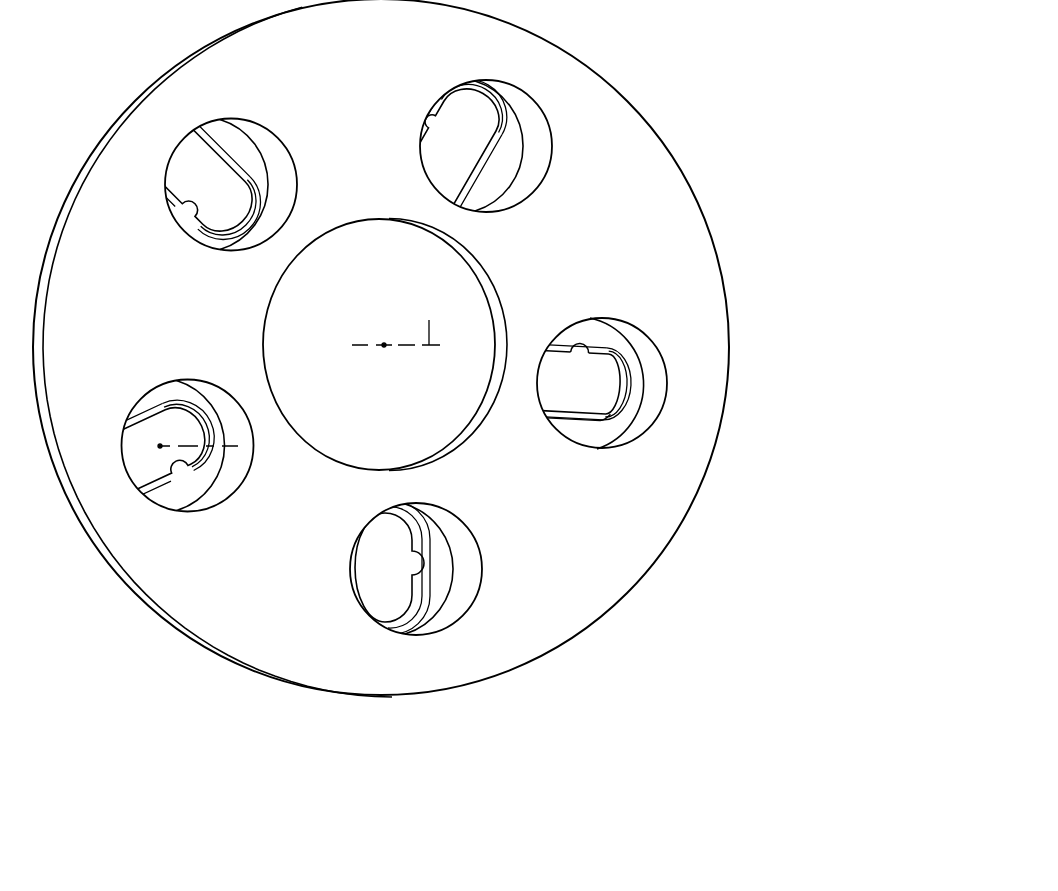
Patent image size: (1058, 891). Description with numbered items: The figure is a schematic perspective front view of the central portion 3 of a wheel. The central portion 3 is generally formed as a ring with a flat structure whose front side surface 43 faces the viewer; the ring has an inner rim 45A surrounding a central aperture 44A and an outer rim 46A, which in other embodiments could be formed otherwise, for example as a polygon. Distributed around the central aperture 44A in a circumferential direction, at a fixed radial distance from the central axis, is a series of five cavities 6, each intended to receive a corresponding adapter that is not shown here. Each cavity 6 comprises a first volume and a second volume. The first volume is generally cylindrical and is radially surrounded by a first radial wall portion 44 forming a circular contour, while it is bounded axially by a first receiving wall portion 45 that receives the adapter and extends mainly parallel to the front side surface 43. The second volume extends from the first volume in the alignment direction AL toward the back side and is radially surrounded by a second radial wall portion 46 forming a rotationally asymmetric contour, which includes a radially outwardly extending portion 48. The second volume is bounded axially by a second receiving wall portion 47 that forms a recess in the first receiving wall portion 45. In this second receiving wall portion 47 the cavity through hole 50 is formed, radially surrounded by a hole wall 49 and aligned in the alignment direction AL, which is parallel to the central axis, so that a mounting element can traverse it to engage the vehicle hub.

The central portion 3 is at (688, 84).
The cavity 6 is at (657, 440).
The front side surface 43 is at (562, 540).
The first radial wall portion 44 is at (652, 383).
The central aperture 44A is at (403, 418).
The first receiving wall portion 45 is at (607, 345).
The inner rim 45A is at (325, 456).
The second radial wall portion 46 is at (686, 389).
The outer rim 46A is at (612, 610).
The second receiving wall portion 47 is at (656, 404).
The radially outwardly extending portion 48 is at (672, 324).
The hole wall 49 is at (600, 469).
The cavity through hole 50 is at (661, 452).
The alignment direction AL is at (187, 444).